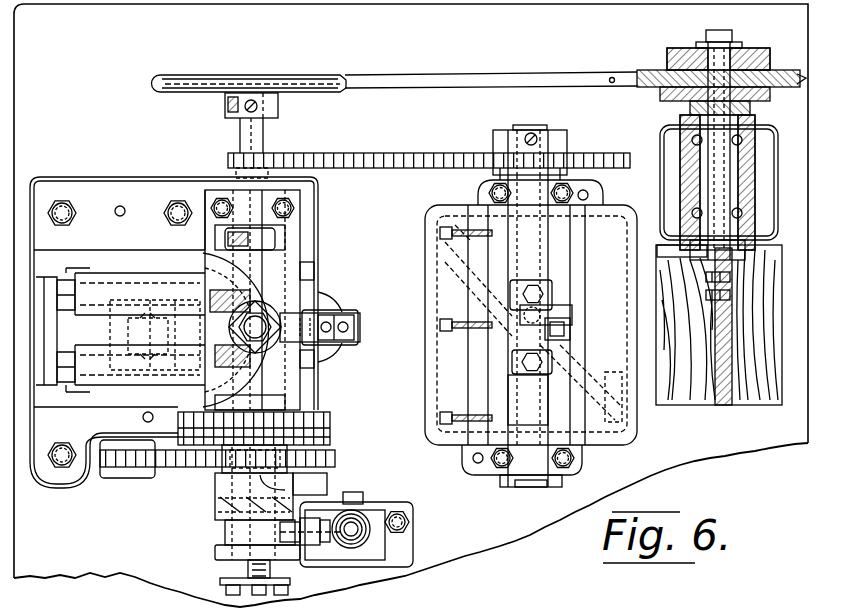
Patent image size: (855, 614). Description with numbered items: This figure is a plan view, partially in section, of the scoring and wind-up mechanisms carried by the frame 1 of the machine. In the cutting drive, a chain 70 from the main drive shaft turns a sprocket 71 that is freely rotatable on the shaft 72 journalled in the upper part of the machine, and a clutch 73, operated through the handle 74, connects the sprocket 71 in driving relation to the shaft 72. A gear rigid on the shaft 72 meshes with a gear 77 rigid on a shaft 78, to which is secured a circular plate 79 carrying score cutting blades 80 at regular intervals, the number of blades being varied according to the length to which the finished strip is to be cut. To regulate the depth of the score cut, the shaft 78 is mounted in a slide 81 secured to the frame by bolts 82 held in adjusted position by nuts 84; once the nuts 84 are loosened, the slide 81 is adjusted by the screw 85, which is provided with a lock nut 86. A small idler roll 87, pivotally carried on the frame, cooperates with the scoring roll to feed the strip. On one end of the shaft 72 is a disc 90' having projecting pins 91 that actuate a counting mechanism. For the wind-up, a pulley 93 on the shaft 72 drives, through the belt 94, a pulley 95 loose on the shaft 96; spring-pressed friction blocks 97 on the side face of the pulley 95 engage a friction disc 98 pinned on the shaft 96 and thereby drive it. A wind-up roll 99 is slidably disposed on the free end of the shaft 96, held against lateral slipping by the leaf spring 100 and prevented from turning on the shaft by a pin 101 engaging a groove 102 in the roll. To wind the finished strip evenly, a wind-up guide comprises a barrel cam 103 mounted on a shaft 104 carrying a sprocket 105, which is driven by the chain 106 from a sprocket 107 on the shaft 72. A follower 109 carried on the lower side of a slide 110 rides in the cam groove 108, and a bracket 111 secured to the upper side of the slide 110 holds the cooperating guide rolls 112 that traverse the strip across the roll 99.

The frame 1 is at (522, 530).
The chain 70 is at (168, 468).
The sprocket 71 is at (215, 488).
The shaft 72 is at (255, 133).
The clutch 73 is at (215, 518).
The handle 74 is at (362, 512).
The gear 77 is at (330, 432).
The shaft 78 is at (290, 490).
The circular plate 79 is at (225, 345).
The score cutting blades 80 is at (316, 312).
The slide 81 is at (246, 240).
The bolts 82 is at (108, 285).
The nuts 84 is at (57, 358).
The screw 85 is at (233, 325).
The lock nut 86 is at (284, 340).
The idler roll 87 is at (135, 330).
The disc 90' is at (240, 572).
The projecting pins 91 is at (288, 588).
The pulley 93 is at (312, 76).
The belt 94 is at (476, 80).
The pulley 95 is at (660, 72).
The shaft 96 is at (740, 106).
The friction blocks 97 is at (775, 72).
The friction disc 98 is at (676, 105).
The wind-up roll 99 is at (767, 405).
The leaf spring 100 is at (712, 405).
The pin 101 is at (672, 248).
The groove 102 is at (665, 258).
The barrel cam 103 is at (610, 438).
The shaft 104 is at (530, 487).
The sprocket 105 is at (560, 143).
The chain 106 is at (410, 153).
The sprocket 107 is at (236, 174).
The cam groove 108 is at (445, 264).
The follower 109 is at (524, 283).
The slide 110 is at (535, 378).
The bracket 111 is at (568, 305).
The guide rolls 112 is at (572, 326).